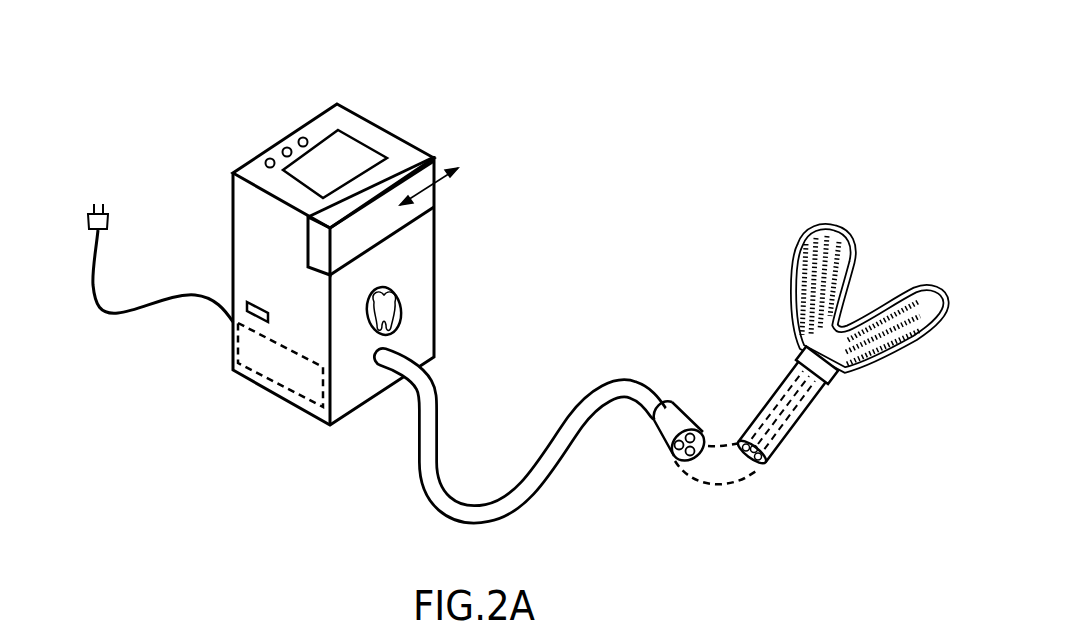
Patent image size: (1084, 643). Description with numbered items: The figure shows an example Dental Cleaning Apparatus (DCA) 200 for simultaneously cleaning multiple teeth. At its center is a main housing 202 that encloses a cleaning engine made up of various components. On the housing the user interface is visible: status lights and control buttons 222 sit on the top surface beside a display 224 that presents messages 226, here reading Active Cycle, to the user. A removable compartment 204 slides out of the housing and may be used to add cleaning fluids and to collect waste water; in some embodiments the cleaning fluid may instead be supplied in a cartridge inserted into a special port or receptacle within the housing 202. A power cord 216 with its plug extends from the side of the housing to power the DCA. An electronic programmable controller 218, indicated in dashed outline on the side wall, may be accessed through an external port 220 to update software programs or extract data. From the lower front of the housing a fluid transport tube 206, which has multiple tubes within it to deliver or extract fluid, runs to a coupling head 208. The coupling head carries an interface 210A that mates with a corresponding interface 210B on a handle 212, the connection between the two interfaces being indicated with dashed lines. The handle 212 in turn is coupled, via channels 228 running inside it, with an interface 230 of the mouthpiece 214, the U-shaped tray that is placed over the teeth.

The Dental Cleaning Apparatus 200 is at (717, 61).
The main housing 202 is at (437, 267).
The removable compartment 204 is at (428, 152).
The fluid transport tube 206 is at (552, 448).
The coupling head 208 is at (697, 405).
The interface 210A is at (668, 460).
The interface 210B is at (753, 466).
The handle 212 is at (800, 413).
The mouthpiece 214 is at (820, 230).
The power cord 216 is at (138, 315).
The electronic programmable controller 218 is at (263, 373).
The external port 220 is at (250, 300).
The control buttons 222 is at (300, 134).
The display 224 is at (342, 140).
The messages 226 is at (366, 152).
The channels 228 is at (783, 400).
The interface 230 is at (828, 371).